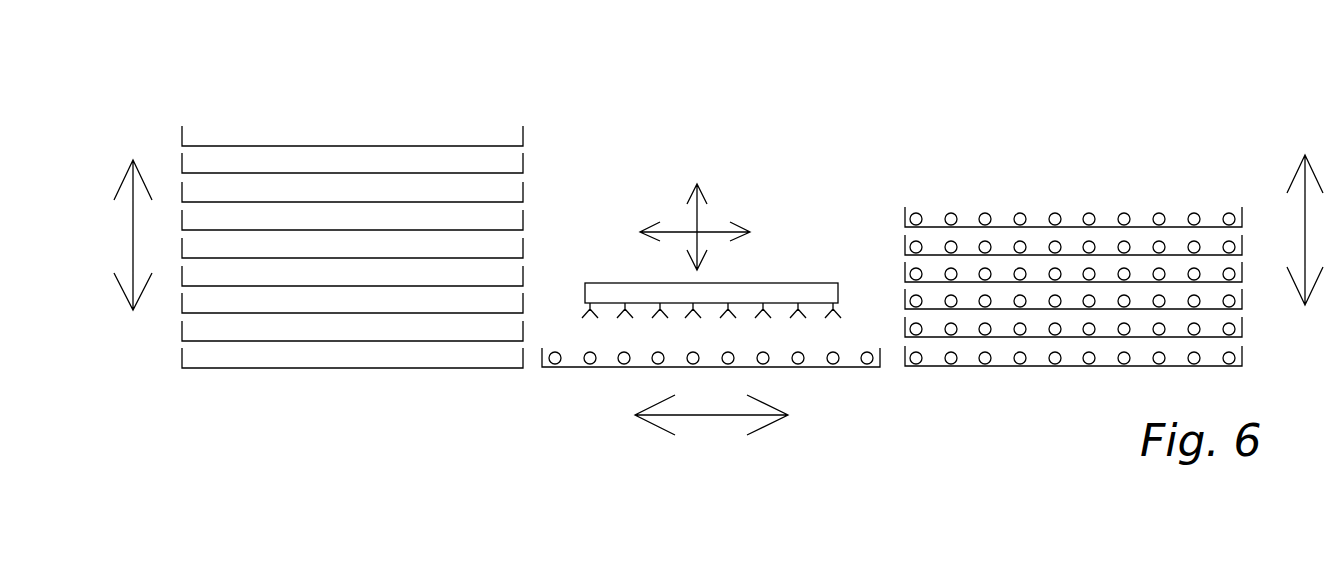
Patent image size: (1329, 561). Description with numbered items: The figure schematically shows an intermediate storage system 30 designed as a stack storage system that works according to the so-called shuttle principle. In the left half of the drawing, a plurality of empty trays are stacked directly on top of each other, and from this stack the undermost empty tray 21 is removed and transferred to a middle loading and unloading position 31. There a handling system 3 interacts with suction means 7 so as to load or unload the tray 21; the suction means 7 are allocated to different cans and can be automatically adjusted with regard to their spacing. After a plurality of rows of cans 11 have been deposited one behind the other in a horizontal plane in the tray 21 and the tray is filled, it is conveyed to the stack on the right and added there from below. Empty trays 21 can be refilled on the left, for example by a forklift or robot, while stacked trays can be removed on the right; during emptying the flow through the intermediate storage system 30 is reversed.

The intermediate storage system 30 is at (748, 88).
The tray 21 is at (437, 367).
The handling system 3 is at (733, 288).
The suction means 7 is at (588, 303).
The loading and unloading position 31 is at (590, 400).
The can 11 is at (765, 358).